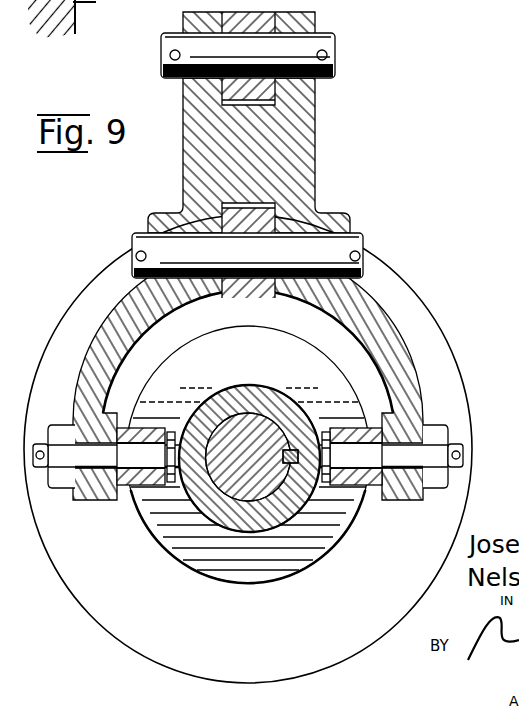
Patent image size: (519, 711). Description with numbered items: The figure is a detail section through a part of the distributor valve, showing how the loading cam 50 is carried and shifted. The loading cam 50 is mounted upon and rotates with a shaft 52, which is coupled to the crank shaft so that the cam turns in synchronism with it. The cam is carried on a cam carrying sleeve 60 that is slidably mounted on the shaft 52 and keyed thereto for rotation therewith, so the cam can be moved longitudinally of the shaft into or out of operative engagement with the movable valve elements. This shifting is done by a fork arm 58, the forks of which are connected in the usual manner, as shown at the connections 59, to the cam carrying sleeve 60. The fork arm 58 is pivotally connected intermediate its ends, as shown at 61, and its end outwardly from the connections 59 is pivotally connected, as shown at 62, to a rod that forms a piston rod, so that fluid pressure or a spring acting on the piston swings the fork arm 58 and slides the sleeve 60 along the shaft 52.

The loading cam 50 is at (430, 368).
The shaft 52 is at (245, 490).
The fork arm 58 is at (300, 155).
The fork connections 59 is at (153, 457).
The cam carrying sleeve 60 is at (243, 400).
The pivotal connection 61 is at (345, 246).
The pivotal connection 62 is at (328, 44).